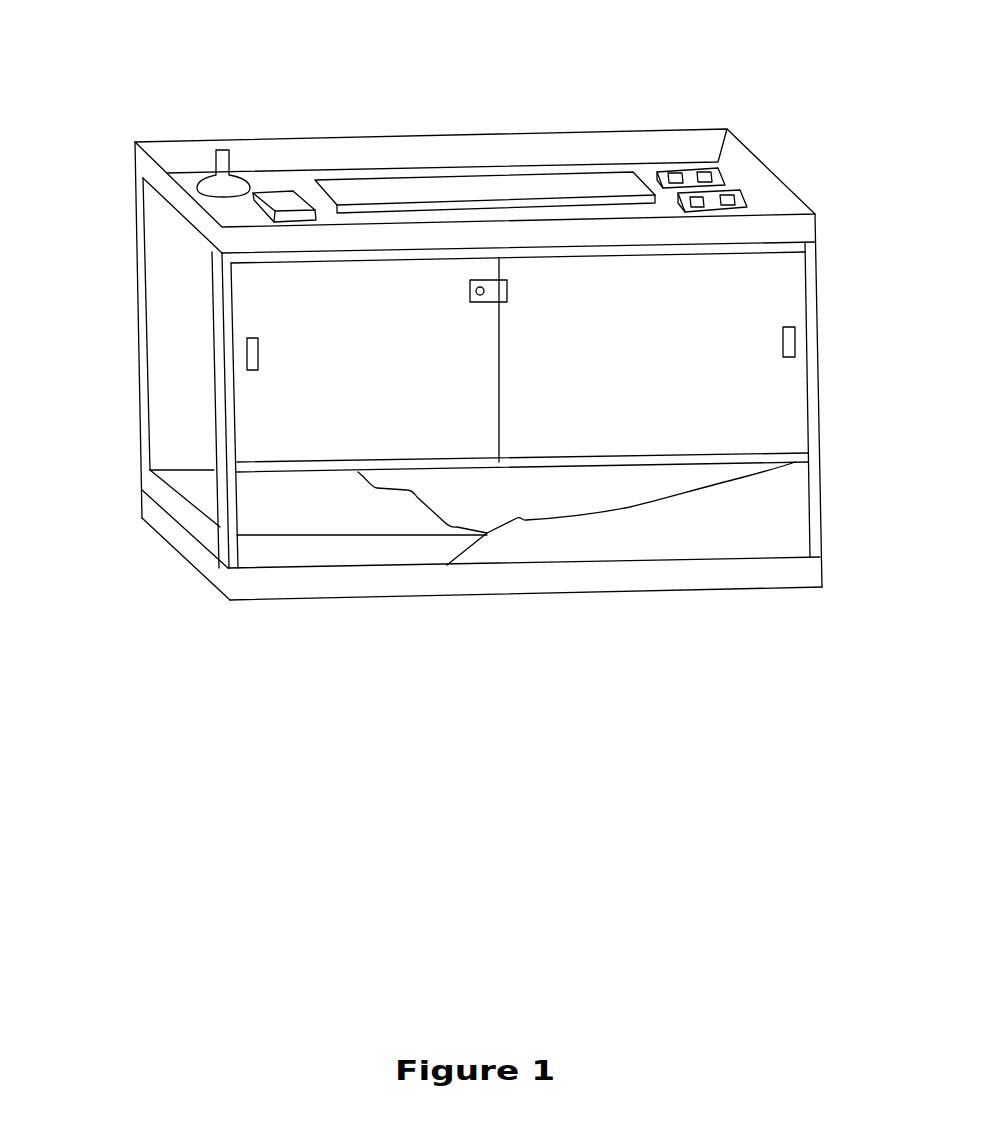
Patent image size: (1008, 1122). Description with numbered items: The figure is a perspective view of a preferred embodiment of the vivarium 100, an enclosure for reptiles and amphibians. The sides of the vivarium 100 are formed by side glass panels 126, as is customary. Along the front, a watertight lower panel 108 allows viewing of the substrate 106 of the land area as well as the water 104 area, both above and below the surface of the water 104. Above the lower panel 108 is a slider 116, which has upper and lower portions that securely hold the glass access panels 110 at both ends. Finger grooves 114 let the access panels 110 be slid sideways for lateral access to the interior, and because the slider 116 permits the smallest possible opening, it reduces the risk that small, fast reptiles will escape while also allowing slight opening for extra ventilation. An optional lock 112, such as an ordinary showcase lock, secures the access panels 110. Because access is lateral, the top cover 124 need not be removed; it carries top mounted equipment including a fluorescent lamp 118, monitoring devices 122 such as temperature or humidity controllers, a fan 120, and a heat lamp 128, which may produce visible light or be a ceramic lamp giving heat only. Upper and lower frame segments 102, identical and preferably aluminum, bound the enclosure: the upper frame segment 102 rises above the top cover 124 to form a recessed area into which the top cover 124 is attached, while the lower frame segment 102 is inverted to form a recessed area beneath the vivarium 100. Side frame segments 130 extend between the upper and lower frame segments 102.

The vivarium 100 is at (120, 96).
The frame segments 102 is at (545, 147).
The water 104 is at (395, 523).
The substrate 106 is at (553, 540).
The lower panel 108 is at (590, 497).
The access panels 110 is at (780, 263).
The lock 112 is at (485, 303).
The finger grooves 114 is at (258, 352).
The slider 116 is at (533, 253).
The fluorescent lamp 118 is at (368, 188).
The fan 120 is at (287, 202).
The monitoring devices 122 is at (748, 205).
The top cover 124 is at (642, 172).
The side glass panels 126 is at (178, 332).
The heat lamp 128 is at (222, 172).
The side frame segments 130 is at (216, 410).